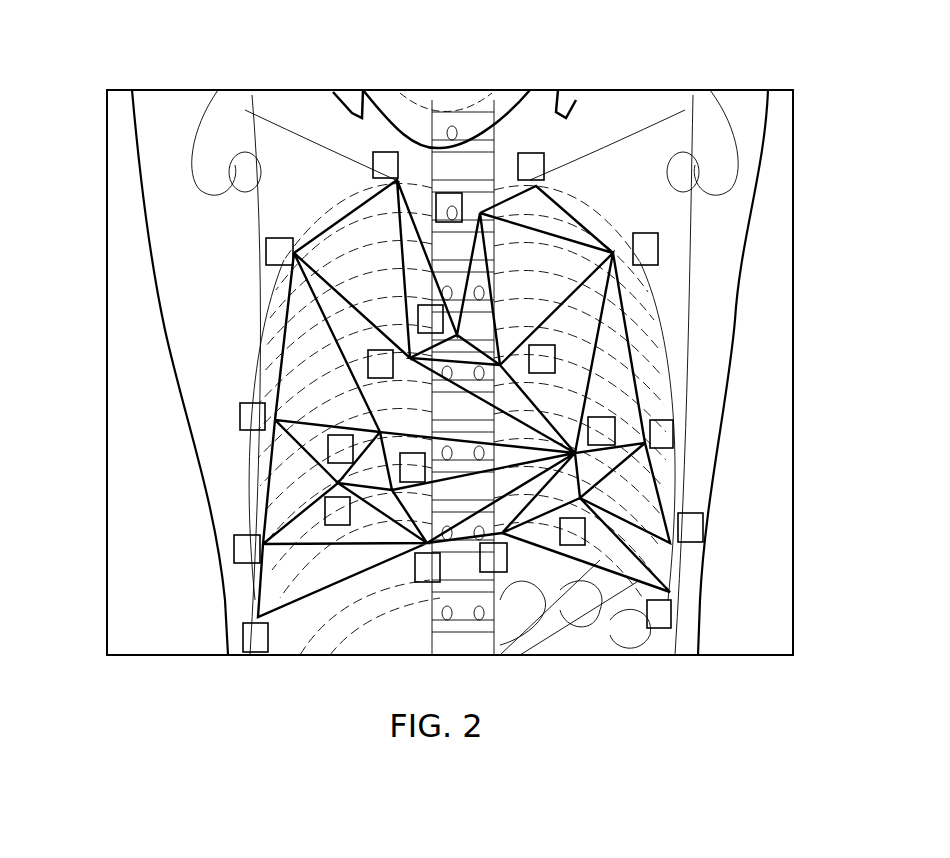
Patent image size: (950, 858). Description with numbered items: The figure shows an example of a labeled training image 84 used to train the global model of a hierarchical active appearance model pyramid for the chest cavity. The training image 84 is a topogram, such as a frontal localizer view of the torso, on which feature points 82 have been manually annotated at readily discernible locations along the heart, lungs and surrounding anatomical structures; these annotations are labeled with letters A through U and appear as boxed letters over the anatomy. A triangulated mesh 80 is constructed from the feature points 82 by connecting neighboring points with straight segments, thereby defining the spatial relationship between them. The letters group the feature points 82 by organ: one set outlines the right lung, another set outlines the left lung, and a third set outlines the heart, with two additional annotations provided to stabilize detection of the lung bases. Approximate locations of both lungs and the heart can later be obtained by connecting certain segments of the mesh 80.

The triangulated mesh 80 is at (329, 200).
The feature points 82 is at (648, 222).
The labeled training image 84 is at (233, 86).